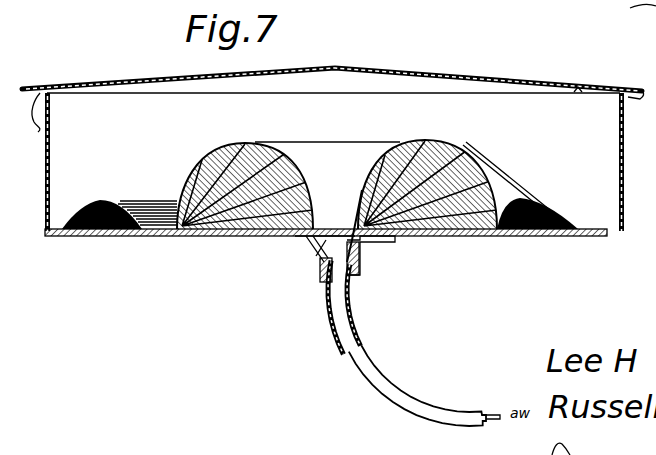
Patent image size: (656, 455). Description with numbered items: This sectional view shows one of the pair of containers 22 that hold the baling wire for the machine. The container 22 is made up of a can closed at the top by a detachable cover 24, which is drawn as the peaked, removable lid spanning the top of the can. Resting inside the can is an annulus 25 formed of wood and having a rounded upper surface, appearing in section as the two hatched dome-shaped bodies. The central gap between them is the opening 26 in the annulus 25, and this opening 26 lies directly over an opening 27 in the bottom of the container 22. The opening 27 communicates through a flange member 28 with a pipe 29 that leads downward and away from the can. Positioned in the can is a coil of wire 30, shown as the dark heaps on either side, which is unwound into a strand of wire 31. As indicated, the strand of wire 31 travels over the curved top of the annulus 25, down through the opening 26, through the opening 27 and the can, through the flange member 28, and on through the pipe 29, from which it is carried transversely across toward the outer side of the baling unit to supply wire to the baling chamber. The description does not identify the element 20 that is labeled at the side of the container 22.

The container 20 is at (623, 176).
The container 22 is at (507, 79).
The detachable cover 24 is at (399, 71).
The annulus 25 is at (199, 152).
The opening 26 is at (345, 176).
The opening 27 is at (326, 247).
The flange member 28 is at (358, 250).
The pipe 29 is at (359, 374).
The coil of wire 30 is at (104, 230).
The strand of wire 31 is at (358, 263).